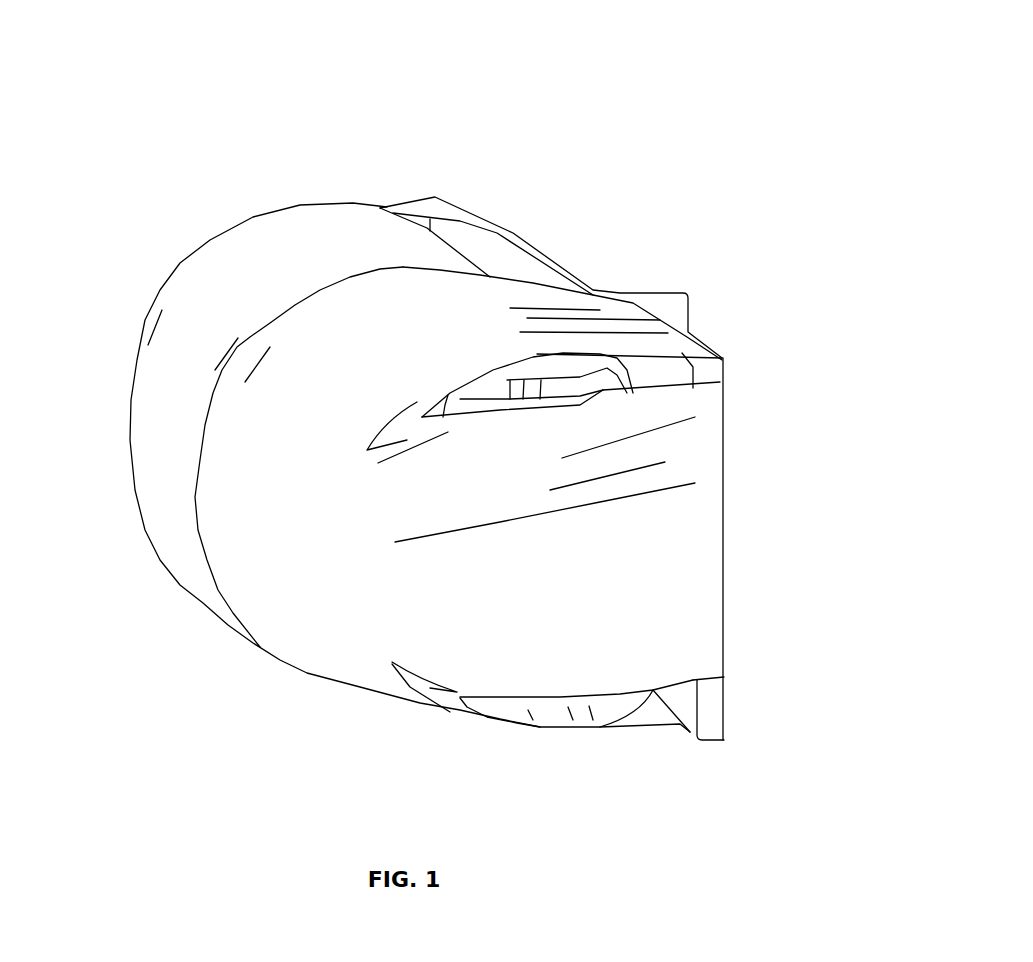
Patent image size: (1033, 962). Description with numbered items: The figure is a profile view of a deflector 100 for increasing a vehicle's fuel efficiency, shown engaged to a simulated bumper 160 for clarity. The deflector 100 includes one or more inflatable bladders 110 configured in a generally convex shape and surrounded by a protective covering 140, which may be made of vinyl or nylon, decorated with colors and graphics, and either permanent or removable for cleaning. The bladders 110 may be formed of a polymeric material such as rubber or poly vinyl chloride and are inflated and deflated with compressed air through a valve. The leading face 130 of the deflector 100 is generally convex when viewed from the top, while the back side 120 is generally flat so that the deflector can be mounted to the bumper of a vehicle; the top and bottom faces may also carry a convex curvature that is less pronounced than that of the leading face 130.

The deflector 100 is at (332, 238).
The inflatable bladder 110 is at (603, 387).
The back side 120 is at (473, 263).
The leading face 130 is at (152, 423).
The protective covering 140 is at (505, 483).
The simulated bumper 160 is at (707, 700).